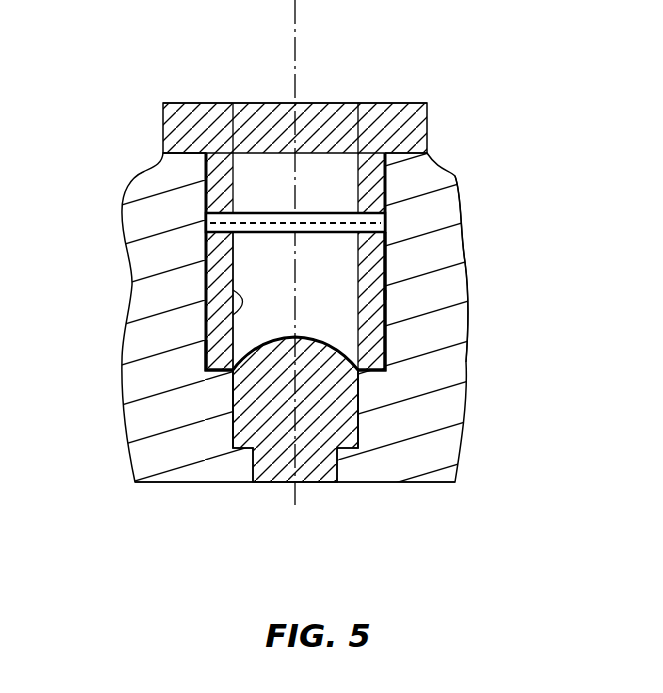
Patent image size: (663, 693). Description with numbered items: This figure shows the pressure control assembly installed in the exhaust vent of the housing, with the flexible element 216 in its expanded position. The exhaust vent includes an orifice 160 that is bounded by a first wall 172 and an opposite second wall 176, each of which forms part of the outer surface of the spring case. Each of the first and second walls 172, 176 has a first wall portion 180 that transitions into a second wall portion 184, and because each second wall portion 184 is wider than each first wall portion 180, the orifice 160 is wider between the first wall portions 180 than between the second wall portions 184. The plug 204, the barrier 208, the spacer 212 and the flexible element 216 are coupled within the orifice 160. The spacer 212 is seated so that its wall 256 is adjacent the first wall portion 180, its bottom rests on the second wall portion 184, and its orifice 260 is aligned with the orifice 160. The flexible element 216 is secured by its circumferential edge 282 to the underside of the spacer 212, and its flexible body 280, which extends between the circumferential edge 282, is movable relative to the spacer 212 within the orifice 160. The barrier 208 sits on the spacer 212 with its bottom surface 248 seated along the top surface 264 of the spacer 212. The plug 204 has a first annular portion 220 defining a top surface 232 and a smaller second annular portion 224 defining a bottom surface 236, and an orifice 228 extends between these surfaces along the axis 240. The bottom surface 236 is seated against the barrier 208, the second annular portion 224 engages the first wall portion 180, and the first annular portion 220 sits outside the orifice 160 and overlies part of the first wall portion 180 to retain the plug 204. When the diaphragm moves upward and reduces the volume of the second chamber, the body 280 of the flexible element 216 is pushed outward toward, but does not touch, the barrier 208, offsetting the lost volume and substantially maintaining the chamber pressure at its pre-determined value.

The orifice 160 is at (333, 427).
The first wall 172 is at (482, 399).
The second wall 176 is at (108, 350).
The first wall portion 180 is at (147, 253).
The second wall portion 184 is at (170, 447).
The plug 204 is at (448, 122).
The barrier 208 is at (194, 220).
The spacer 212 is at (402, 307).
The flexible element 216 is at (188, 382).
The first annular portion 220 is at (150, 128).
The second annular portion 224 is at (194, 182).
The orifice 228 is at (358, 137).
The top surface 232 is at (405, 103).
The bottom surface 236 is at (233, 208).
The axis 240 is at (295, 15).
The bottom surface 248 is at (388, 236).
The wall 256 is at (387, 340).
The orifice 260 is at (233, 290).
The top surface 264 is at (387, 270).
The flexible body 280 is at (282, 350).
The circumferential edge 282 is at (218, 372).